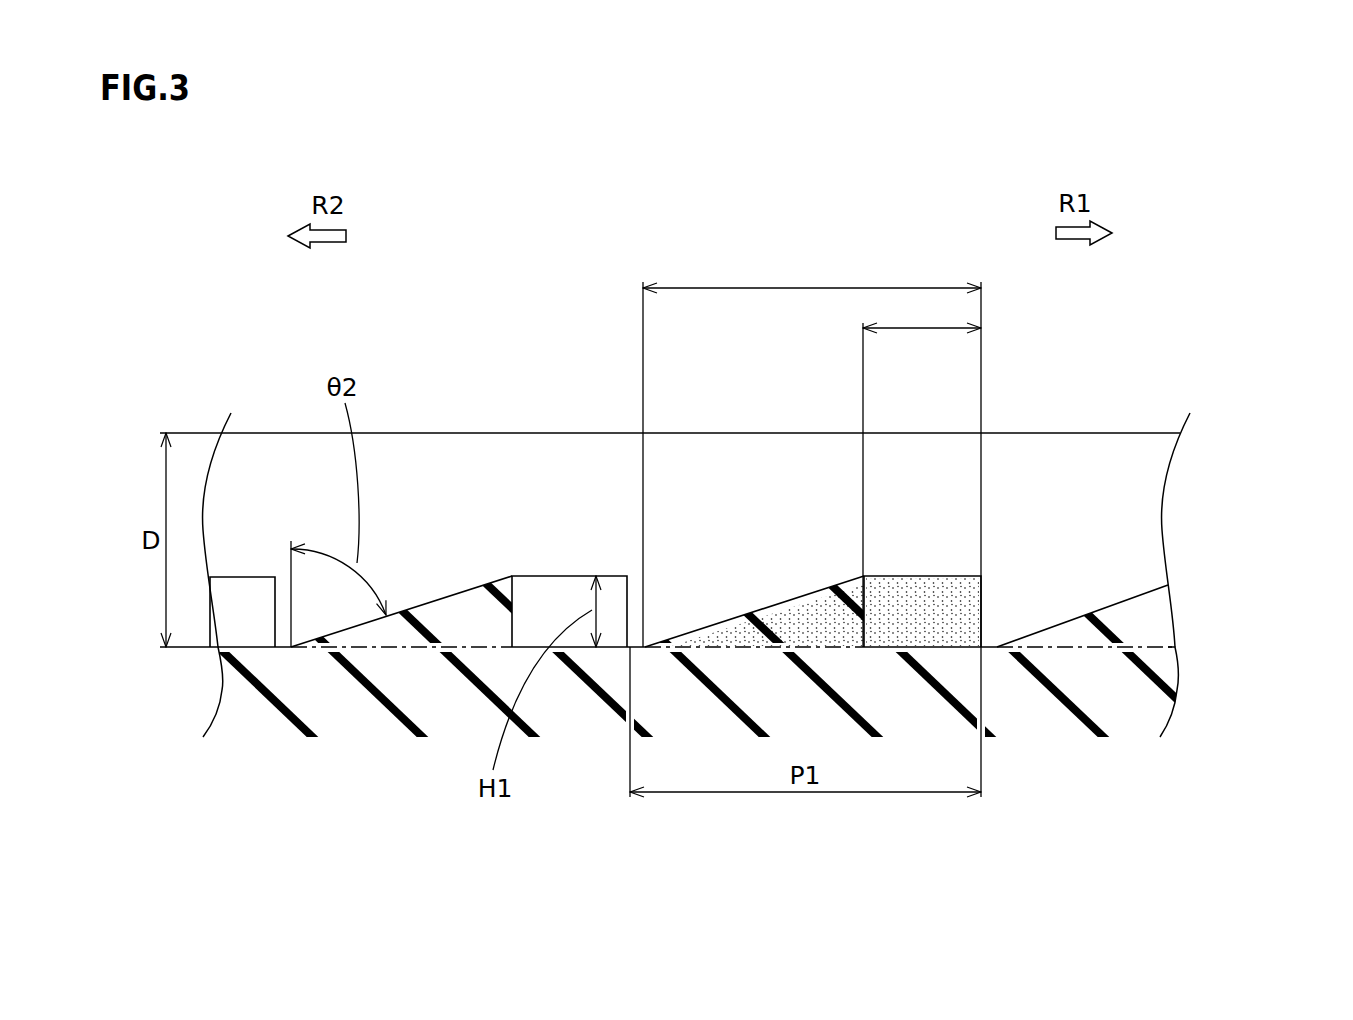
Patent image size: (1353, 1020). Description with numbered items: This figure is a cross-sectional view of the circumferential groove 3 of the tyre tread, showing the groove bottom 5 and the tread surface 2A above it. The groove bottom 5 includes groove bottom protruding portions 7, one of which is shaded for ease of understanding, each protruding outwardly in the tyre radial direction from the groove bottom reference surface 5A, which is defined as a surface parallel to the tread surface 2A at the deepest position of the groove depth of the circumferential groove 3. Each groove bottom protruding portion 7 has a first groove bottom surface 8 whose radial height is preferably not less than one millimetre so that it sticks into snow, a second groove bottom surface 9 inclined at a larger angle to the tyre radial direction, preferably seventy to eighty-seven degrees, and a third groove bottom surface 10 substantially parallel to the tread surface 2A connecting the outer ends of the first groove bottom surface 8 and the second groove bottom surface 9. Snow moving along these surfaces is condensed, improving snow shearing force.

The tread surface 2A is at (1050, 433).
The circumferential groove 3 is at (905, 258).
The groove bottom 5 is at (488, 487).
The groove bottom reference surface 5A is at (1138, 647).
The groove bottom protruding portion 7 is at (535, 587).
The first groove bottom surface 8 is at (947, 596).
The second groove bottom surface 9 is at (733, 612).
The third groove bottom surface 10 is at (923, 573).